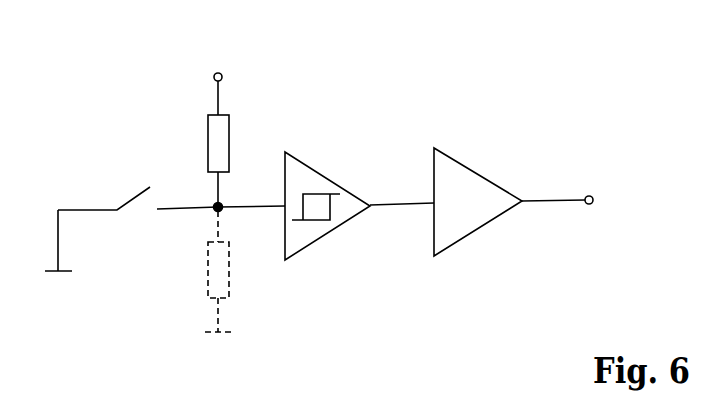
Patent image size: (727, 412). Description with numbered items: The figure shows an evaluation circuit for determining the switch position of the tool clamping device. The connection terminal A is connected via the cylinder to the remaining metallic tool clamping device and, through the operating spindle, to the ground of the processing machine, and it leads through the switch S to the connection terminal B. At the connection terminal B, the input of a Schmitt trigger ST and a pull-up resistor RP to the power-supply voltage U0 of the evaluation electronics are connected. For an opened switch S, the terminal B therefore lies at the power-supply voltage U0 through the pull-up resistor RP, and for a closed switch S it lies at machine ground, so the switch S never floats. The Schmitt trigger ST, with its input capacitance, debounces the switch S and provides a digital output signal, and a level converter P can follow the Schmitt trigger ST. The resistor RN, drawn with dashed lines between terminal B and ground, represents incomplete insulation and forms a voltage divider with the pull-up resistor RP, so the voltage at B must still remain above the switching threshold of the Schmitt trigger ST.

The connection terminal A is at (51, 240).
The switch S is at (138, 169).
The connection terminal B is at (239, 221).
The power-supply voltage U0 is at (219, 75).
The pull-up resistor RP is at (237, 161).
The resistor RN is at (236, 271).
The Schmitt trigger ST is at (359, 192).
The level converter P is at (513, 189).